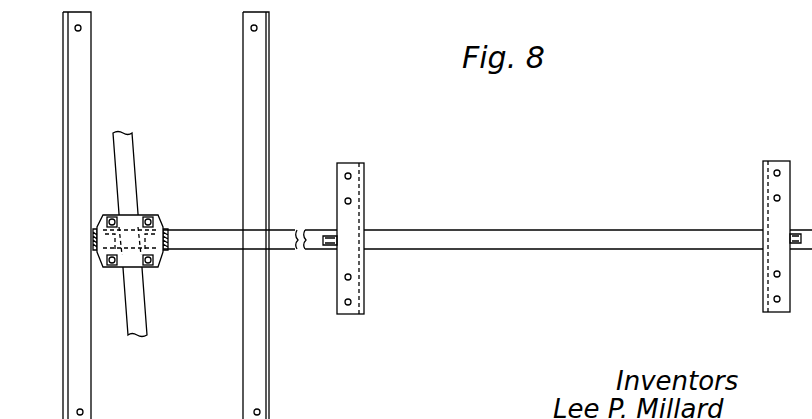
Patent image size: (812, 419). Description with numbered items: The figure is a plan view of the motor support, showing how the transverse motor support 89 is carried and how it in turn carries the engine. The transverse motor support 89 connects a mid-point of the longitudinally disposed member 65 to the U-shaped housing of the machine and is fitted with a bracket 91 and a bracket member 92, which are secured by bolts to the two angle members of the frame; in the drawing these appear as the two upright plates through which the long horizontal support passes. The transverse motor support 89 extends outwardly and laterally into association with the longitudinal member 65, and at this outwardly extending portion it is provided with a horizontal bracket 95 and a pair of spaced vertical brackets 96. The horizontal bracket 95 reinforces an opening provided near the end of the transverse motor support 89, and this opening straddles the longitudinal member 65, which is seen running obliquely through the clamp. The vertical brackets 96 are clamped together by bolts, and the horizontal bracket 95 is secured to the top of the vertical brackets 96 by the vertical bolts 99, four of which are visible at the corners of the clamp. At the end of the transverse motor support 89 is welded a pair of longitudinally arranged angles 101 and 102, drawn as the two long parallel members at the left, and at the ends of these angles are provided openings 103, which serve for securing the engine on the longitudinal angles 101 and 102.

The longitudinally disposed member 65 is at (133, 306).
The transverse motor support 89 is at (414, 250).
The bracket 91 is at (775, 275).
The bracket member 92 is at (355, 290).
The horizontal bracket 95 is at (157, 216).
The vertical brackets 96 is at (164, 236).
The vertical bolts 99 is at (149, 217).
The longitudinally arranged angle 101 is at (258, 52).
The longitudinally arranged angle 102 is at (75, 50).
The openings 103 is at (75, 27).